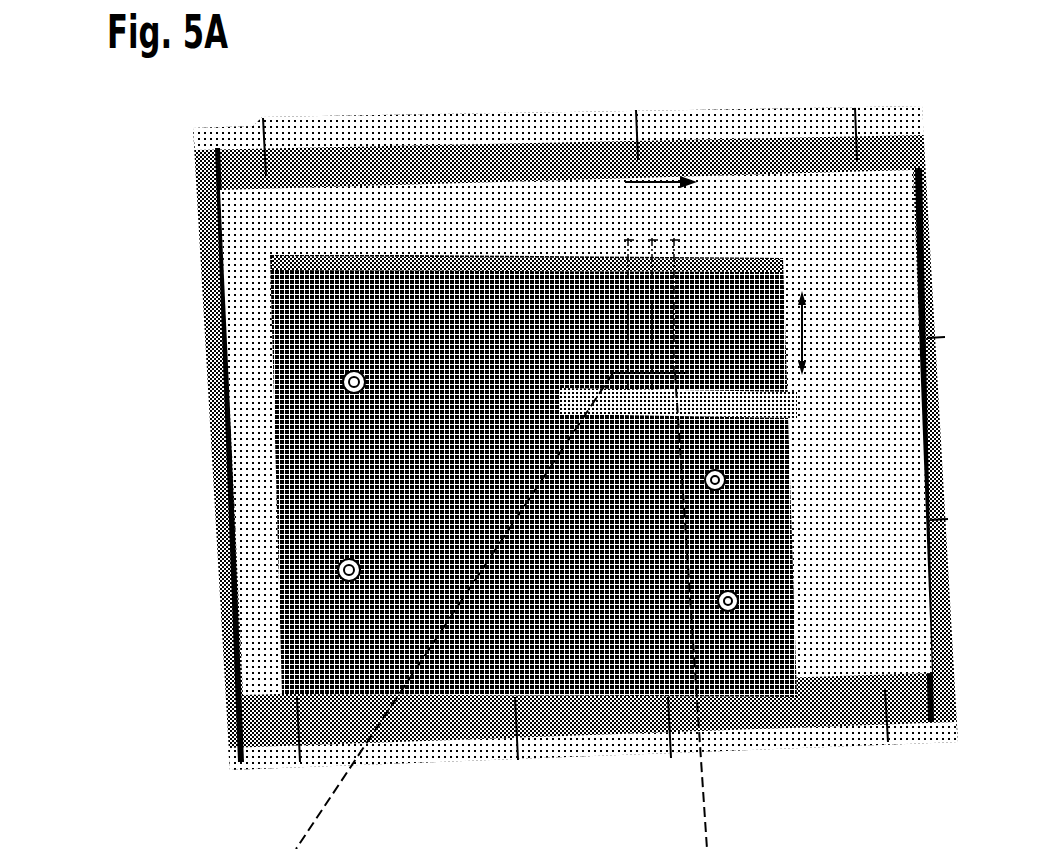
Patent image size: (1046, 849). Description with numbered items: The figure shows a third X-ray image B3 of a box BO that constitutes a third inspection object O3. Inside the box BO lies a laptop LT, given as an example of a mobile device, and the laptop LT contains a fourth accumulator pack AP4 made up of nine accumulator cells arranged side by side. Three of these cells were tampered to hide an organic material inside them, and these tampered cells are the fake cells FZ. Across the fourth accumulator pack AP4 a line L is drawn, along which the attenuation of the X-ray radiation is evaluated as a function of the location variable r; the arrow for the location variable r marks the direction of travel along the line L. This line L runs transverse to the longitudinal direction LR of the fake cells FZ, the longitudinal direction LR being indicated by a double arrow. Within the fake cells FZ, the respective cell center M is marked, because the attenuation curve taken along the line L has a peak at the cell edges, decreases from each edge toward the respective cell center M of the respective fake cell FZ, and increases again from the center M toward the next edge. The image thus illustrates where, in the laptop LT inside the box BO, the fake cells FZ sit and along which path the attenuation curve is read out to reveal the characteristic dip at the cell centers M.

The third X-ray image B3 is at (182, 207).
The box BO is at (772, 145).
The third inspection object O3 is at (863, 645).
The laptop LT is at (412, 313).
The fourth accumulator pack AP4 is at (772, 272).
The location variable r is at (653, 182).
The longitudinal direction LR is at (804, 338).
The cell center M is at (675, 240).
The line L is at (622, 368).
The fake cells FZ is at (657, 350).